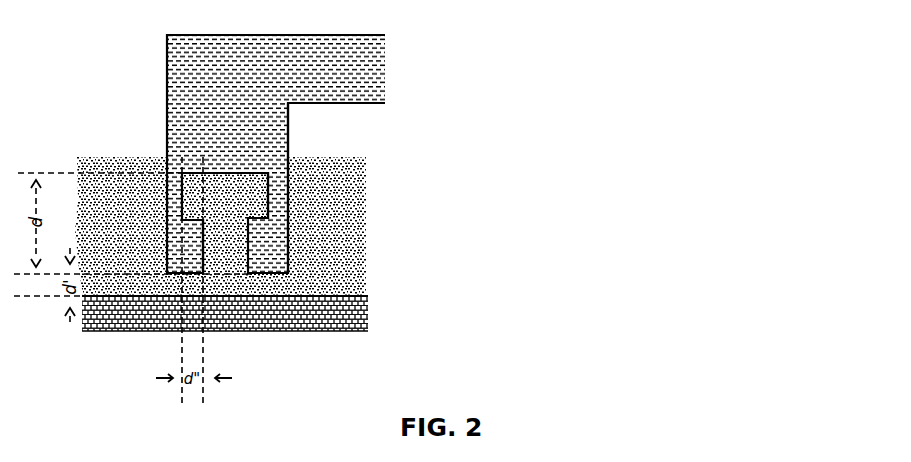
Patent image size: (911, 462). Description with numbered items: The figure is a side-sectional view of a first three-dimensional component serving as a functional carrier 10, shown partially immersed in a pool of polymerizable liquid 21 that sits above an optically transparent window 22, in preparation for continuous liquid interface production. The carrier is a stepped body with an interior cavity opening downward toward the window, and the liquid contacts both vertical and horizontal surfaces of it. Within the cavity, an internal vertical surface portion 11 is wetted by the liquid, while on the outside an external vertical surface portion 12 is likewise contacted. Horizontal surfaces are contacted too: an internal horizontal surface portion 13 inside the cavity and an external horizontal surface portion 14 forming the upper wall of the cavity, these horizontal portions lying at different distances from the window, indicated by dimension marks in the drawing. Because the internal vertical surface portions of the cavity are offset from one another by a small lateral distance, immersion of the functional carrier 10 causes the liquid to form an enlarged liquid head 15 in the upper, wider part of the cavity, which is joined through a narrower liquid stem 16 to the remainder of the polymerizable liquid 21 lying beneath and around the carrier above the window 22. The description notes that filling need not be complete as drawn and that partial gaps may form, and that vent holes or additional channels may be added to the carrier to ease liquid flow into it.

The functional carrier 10 is at (276, 154).
The internal vertical surface portion 11 is at (206, 258).
The external vertical surface portion 12 is at (289, 228).
The internal horizontal surface portion 13 is at (268, 275).
The external horizontal surface portion 14 is at (240, 170).
The enlarged liquid head 15 is at (225, 195).
The liquid stem 16 is at (210, 246).
The polymerizable liquid 21 is at (328, 206).
The optically transparent window 22 is at (341, 317).